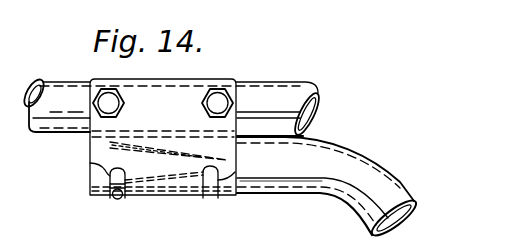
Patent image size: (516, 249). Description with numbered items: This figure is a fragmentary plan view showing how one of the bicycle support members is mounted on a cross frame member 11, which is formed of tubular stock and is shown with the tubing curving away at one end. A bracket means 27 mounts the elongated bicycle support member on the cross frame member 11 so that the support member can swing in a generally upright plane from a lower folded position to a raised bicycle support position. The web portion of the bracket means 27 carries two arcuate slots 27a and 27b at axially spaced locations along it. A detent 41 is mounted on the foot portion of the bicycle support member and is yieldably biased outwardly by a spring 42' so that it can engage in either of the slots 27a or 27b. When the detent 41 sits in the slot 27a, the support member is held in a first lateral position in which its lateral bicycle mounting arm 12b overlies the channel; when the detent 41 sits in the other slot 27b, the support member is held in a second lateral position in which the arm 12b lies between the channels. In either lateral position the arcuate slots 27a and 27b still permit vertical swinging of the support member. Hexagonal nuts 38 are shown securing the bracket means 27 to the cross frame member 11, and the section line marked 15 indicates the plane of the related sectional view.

The cross frame member 11 is at (297, 98).
The bracket means 27 is at (206, 83).
The arcuate slot 27a is at (88, 163).
The arcuate slot 27b is at (237, 176).
The hex nut 38 is at (224, 103).
The detent 41 is at (118, 198).
The spring 42' is at (164, 203).
The upper end portion 12b is at (263, 178).
The section line 15- 15 is at (95, 228).